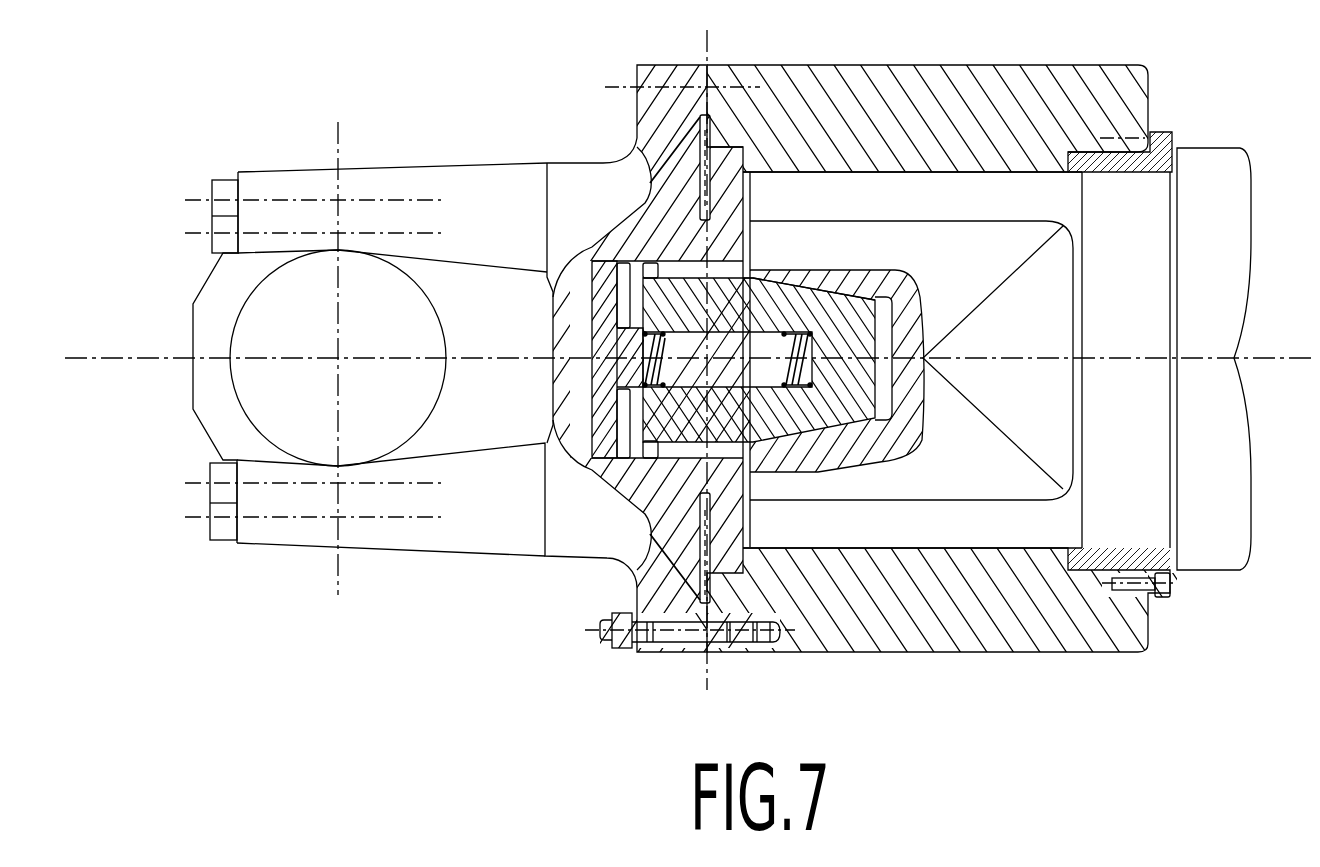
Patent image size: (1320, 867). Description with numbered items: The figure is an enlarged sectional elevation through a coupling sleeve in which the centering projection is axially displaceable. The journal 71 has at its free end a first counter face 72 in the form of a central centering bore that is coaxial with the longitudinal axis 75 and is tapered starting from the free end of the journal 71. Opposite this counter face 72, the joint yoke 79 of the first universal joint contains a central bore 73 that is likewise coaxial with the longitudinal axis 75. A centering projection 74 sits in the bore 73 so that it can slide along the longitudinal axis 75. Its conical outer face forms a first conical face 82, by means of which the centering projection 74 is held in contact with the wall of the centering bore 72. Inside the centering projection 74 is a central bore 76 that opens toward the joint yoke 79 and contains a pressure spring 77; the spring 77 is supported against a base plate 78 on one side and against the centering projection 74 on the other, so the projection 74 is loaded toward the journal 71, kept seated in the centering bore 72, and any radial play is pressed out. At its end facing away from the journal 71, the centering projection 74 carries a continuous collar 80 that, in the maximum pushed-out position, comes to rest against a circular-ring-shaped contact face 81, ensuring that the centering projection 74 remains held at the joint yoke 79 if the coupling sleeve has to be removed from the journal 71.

The journal 71 is at (968, 530).
The first counter face 72 is at (870, 298).
The central bore 73 is at (728, 295).
The centering projection 74 is at (845, 412).
The longitudinal axis 75 is at (1025, 362).
The central bore 76 is at (761, 322).
The pressure spring 77 is at (662, 340).
The base plate 78 is at (605, 380).
The joint yoke 79 is at (496, 192).
The continuous collar 80 is at (652, 452).
The contact face 81 is at (650, 456).
The first conical face 82 is at (820, 290).